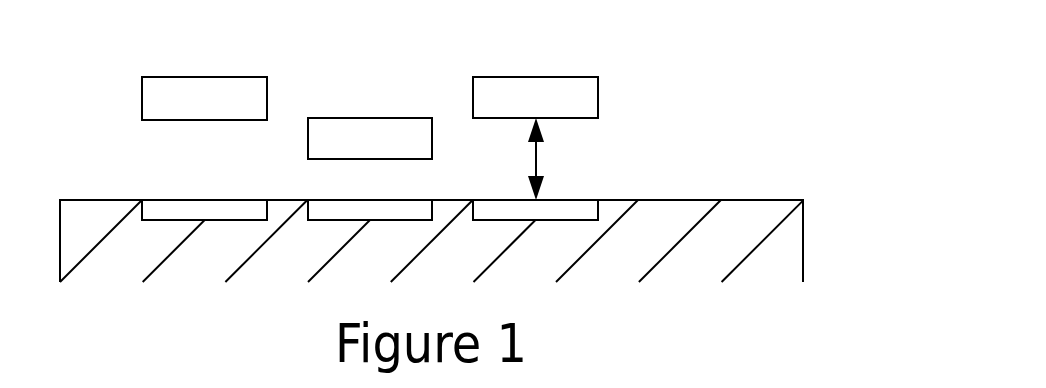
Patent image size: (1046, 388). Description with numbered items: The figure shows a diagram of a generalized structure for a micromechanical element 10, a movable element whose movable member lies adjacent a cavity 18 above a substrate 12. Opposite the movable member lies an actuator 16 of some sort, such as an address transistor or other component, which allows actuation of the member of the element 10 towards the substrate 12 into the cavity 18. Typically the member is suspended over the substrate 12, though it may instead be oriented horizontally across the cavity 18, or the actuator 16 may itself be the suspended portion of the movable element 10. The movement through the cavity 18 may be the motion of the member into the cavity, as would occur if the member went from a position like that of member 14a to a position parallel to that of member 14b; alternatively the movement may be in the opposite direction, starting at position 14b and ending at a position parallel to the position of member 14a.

The micromechanical element 10 is at (838, 117).
The substrate 12 is at (805, 240).
The position of member 14a is at (560, 77).
The position of member 14b is at (332, 118).
The actuator 16 is at (582, 200).
The cavity 18 is at (536, 160).